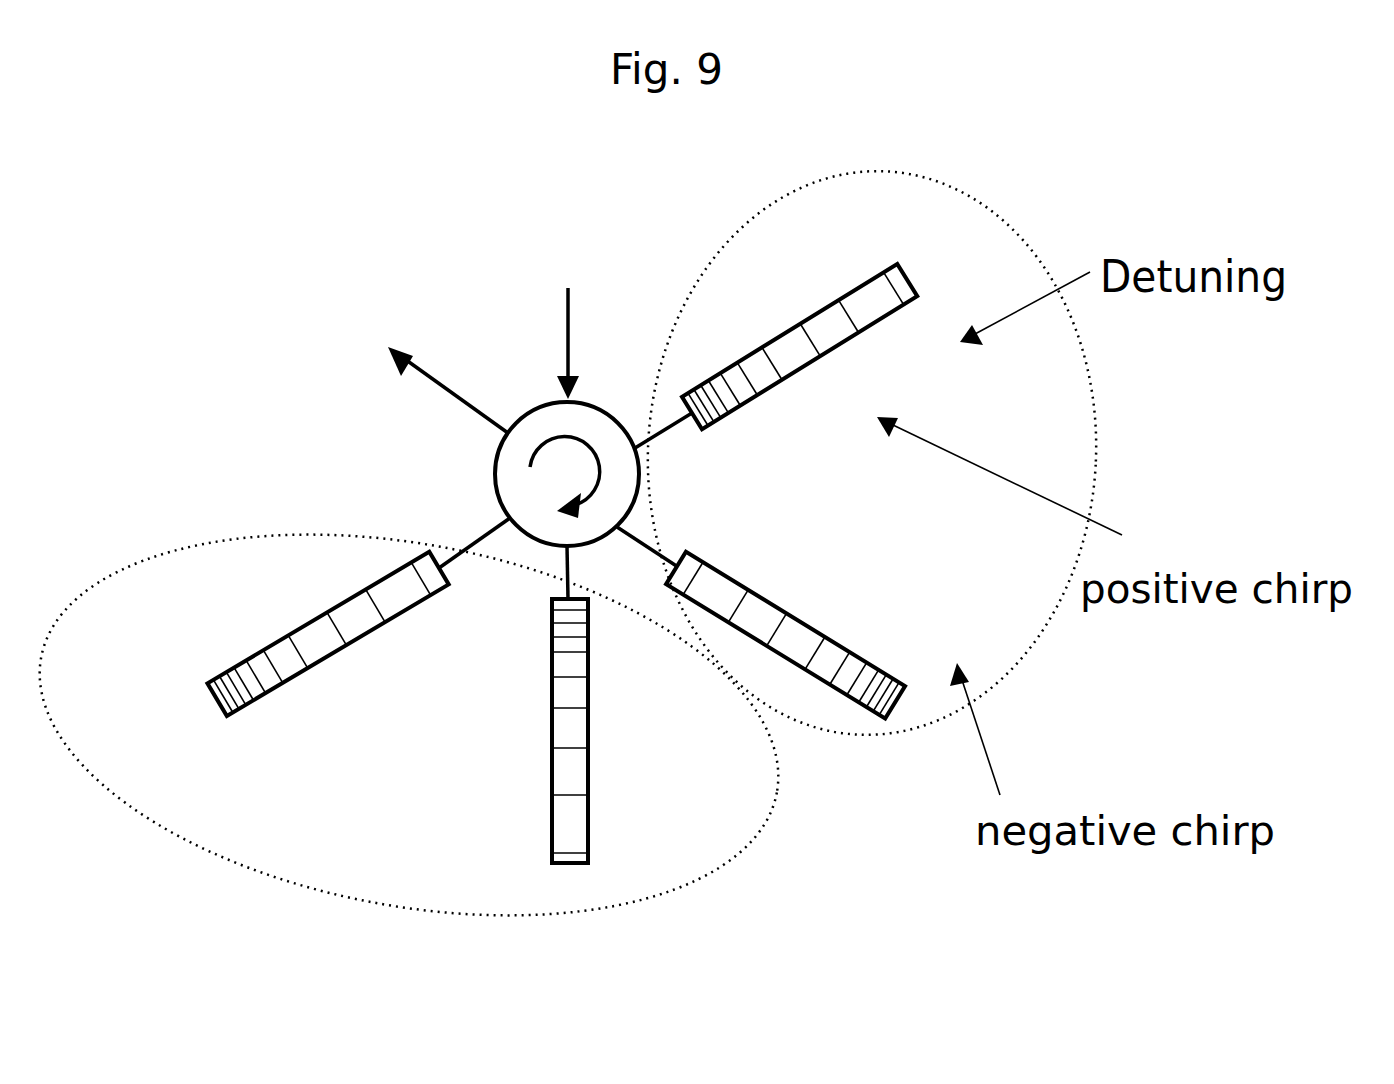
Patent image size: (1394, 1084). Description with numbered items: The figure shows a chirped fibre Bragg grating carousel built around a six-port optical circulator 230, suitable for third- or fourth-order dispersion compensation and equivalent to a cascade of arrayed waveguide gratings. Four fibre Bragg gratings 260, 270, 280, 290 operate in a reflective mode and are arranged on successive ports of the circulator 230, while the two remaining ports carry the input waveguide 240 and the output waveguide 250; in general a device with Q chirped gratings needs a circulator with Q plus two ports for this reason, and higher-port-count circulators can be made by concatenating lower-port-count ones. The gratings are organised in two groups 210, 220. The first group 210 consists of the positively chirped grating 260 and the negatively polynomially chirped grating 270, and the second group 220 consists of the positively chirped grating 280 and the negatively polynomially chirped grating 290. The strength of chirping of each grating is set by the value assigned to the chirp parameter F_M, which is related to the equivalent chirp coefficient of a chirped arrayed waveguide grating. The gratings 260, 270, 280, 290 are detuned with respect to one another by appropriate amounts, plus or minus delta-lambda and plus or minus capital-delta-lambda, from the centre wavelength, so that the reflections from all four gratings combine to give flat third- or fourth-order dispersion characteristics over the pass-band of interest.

The group of fibre Bragg gratings 210 is at (764, 192).
The group of fibre Bragg gratings 220 is at (114, 524).
The 6-port optical circulator 230 is at (494, 467).
The input waveguide 240 is at (567, 323).
The output waveguide 250 is at (450, 382).
The fibre Bragg grating 260 is at (732, 440).
The fibre Bragg grating 270 is at (733, 567).
The fibre Bragg grating 280 is at (547, 685).
The fibre Bragg grating 290 is at (375, 638).